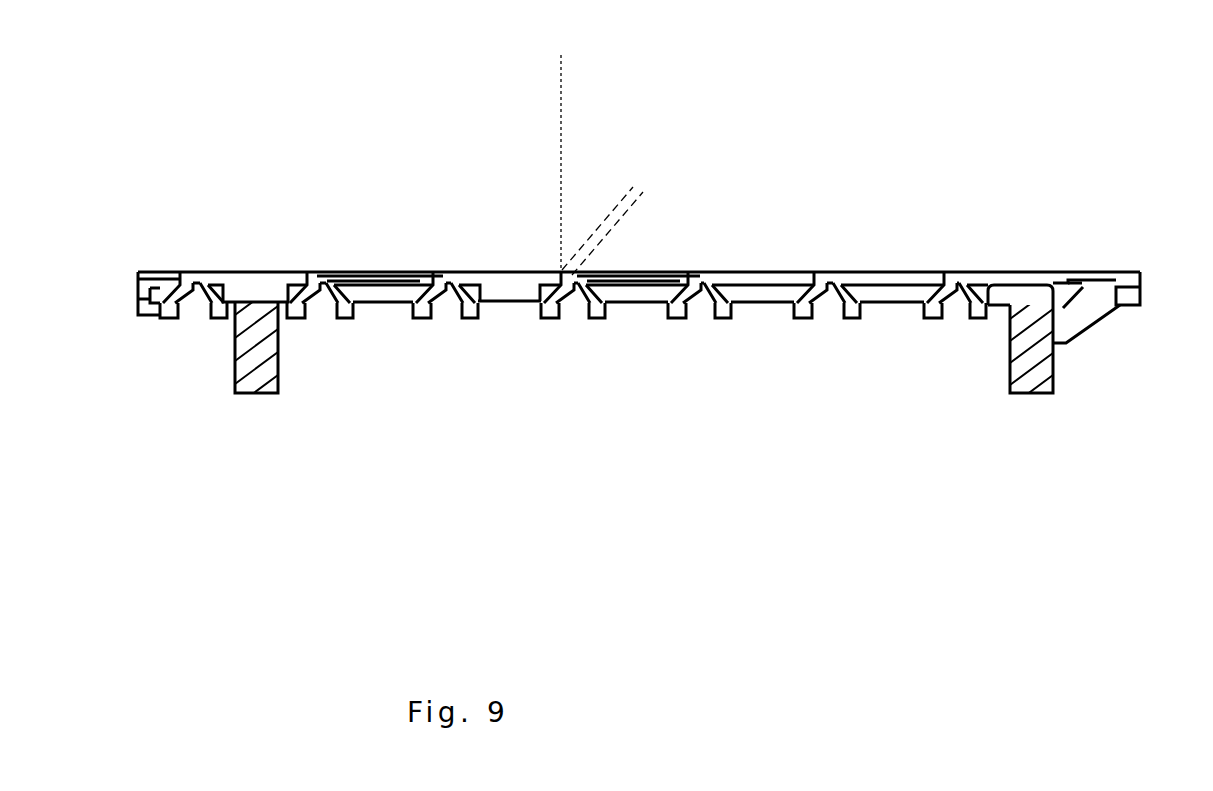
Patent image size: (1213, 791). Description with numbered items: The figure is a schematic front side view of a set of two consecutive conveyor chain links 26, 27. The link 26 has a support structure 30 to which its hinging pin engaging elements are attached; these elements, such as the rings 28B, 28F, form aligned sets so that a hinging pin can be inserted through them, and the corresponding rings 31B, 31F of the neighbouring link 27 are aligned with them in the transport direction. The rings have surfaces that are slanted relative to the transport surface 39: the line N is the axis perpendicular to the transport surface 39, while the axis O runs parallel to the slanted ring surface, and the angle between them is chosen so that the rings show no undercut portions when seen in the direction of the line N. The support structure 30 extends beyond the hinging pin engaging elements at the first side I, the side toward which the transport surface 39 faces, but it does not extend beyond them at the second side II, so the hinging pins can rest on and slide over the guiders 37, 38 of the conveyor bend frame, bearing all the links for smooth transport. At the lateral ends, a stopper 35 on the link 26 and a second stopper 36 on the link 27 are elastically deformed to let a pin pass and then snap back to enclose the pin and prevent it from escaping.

The link 26 is at (1100, 272).
The link 27 is at (173, 273).
The hinging pin engaging element 28B is at (297, 312).
The hinging pin engaging element 28F is at (800, 318).
The support structure 30 is at (788, 275).
The hinging pin engaging element 31B is at (350, 312).
The hinging pin engaging element 31F is at (858, 318).
The stopper 35 is at (507, 300).
The second stopper 36 is at (130, 285).
The guider 37 is at (255, 388).
The guider 38 is at (1018, 382).
The transport surface 39 is at (958, 270).
The line N is at (561, 143).
The axis O is at (607, 218).
The first side I is at (722, 166).
The second side II is at (616, 434).